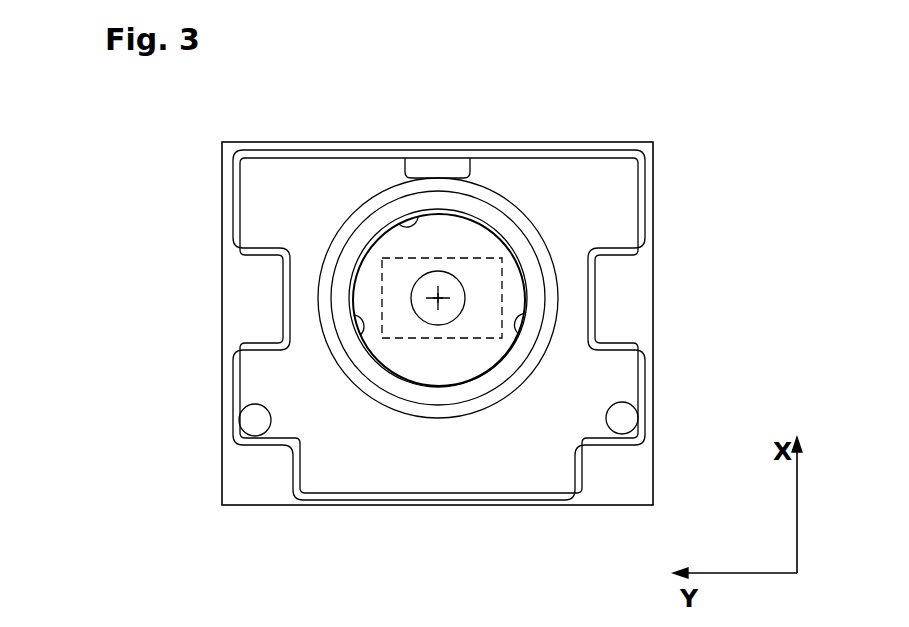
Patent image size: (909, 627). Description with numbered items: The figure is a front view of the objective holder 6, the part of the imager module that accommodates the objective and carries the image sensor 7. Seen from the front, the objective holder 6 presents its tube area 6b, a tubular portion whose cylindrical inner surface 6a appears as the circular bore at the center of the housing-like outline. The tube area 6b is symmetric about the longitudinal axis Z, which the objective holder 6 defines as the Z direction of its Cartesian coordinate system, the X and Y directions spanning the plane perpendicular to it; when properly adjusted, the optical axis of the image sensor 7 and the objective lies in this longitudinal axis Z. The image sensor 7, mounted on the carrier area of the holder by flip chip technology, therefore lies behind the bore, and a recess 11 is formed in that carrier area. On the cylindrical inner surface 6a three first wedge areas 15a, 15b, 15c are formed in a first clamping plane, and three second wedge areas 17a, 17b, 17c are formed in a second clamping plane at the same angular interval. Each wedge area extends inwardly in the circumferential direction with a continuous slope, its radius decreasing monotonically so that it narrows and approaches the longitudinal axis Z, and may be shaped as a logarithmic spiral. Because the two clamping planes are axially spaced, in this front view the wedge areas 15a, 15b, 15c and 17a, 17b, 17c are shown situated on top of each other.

The objective holder 6 is at (228, 184).
The cylindrical inner surface 6a is at (455, 372).
The tube area 6b is at (500, 222).
The image sensor 7 is at (382, 337).
The recess 11 is at (420, 284).
The first wedge area 15a is at (407, 149).
The second wedge area 17a is at (403, 223).
The first wedge area 15b is at (647, 351).
The second wedge area 17b is at (514, 322).
The first wedge area 15c is at (229, 352).
The second wedge area 17c is at (358, 322).
The longitudinal axis Z is at (438, 298).